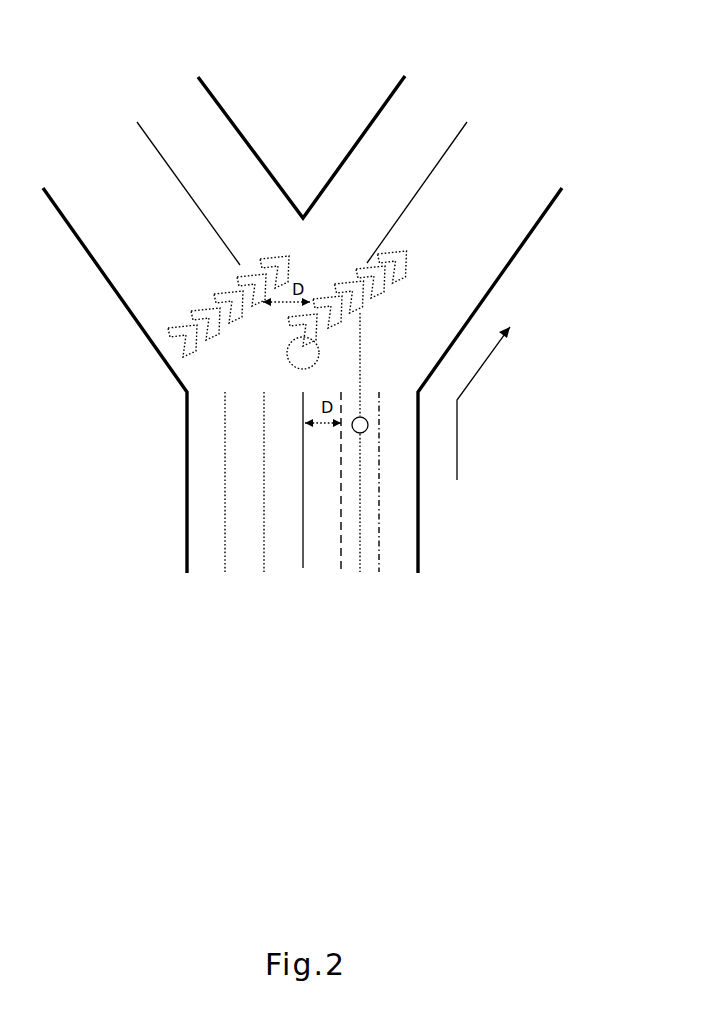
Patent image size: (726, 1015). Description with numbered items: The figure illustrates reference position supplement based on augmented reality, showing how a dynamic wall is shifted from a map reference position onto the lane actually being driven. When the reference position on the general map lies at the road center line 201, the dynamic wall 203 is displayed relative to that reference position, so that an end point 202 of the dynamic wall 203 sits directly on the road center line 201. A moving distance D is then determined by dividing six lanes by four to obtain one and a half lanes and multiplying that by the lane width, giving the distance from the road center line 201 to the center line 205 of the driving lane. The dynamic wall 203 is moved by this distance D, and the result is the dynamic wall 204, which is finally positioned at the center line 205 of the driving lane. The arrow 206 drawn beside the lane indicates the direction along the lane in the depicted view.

The road center line 201 is at (303, 560).
The end point 202 is at (292, 263).
The dynamic wall 203 is at (243, 288).
The dynamic wall 204 is at (412, 257).
The center line of driving lane 205 is at (360, 560).
The moving direction 206 is at (368, 424).